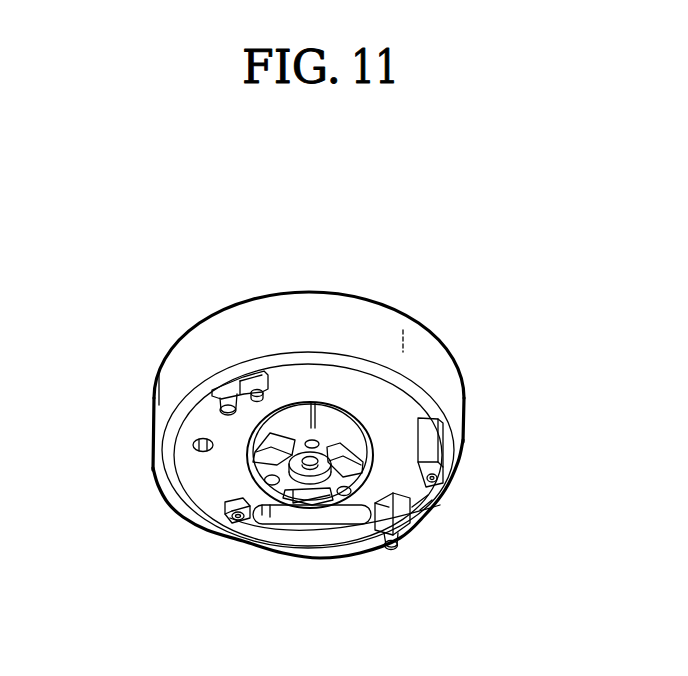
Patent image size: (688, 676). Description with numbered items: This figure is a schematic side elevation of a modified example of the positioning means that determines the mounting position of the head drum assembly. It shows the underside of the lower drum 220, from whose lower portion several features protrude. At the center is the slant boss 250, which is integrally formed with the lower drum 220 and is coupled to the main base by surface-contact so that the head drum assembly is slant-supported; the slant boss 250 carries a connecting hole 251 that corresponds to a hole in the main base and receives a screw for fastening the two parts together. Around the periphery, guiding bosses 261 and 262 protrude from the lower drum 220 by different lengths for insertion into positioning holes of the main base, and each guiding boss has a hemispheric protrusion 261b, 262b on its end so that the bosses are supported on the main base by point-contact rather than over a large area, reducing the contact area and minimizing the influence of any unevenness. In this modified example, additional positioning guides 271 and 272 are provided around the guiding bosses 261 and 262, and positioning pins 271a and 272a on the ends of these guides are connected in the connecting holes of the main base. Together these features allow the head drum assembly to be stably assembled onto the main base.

The lower drum 220 is at (455, 348).
The slant boss 250 is at (339, 418).
The connecting hole 251 is at (343, 495).
The guiding boss 261 is at (425, 446).
The hemispheric protrusion 261b is at (438, 478).
The guiding boss 262 is at (248, 522).
The hemispheric protrusion 262b is at (232, 518).
The positioning guide 271 is at (404, 517).
The positioning pin 271a is at (397, 551).
The positioning guide 272 is at (247, 386).
The positioning pin 272a is at (262, 401).